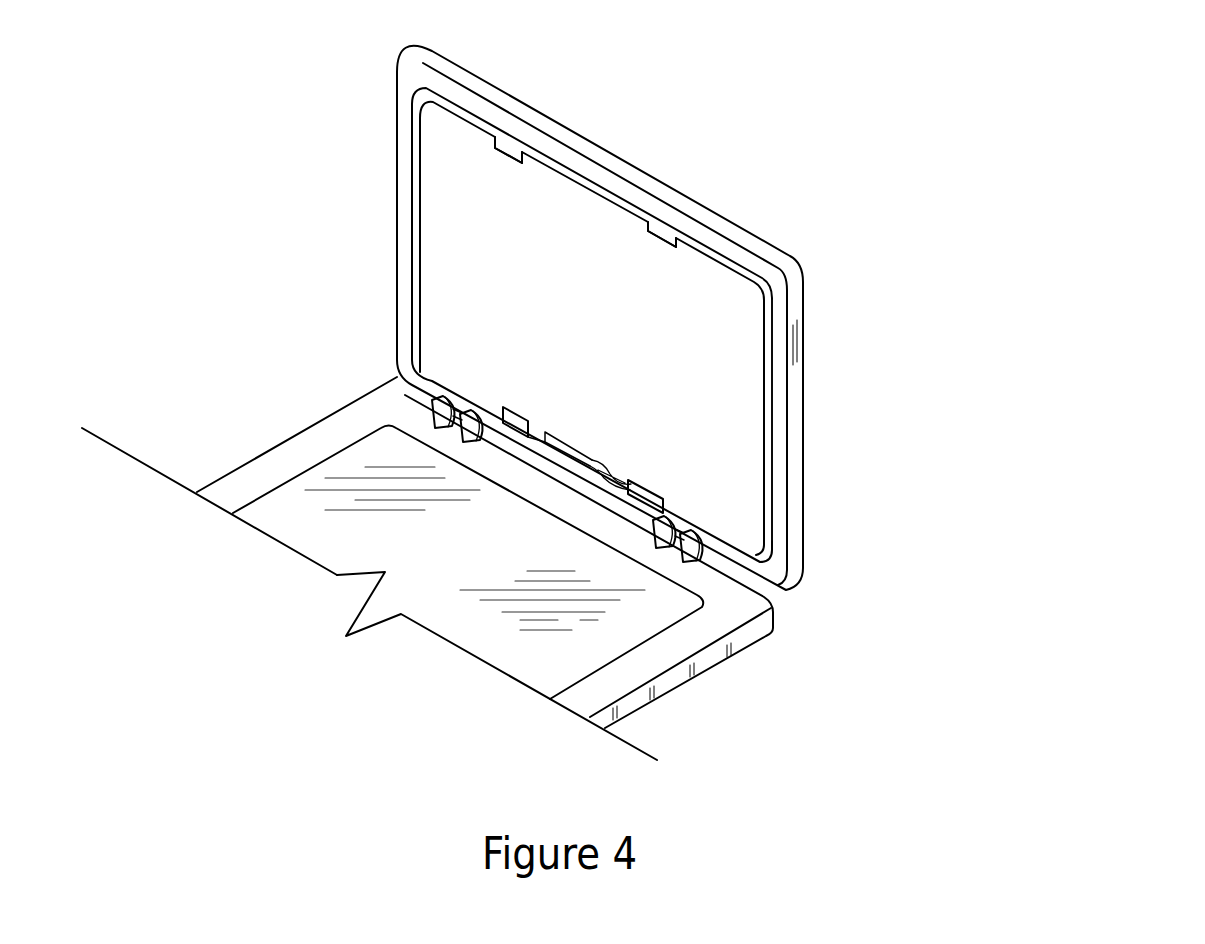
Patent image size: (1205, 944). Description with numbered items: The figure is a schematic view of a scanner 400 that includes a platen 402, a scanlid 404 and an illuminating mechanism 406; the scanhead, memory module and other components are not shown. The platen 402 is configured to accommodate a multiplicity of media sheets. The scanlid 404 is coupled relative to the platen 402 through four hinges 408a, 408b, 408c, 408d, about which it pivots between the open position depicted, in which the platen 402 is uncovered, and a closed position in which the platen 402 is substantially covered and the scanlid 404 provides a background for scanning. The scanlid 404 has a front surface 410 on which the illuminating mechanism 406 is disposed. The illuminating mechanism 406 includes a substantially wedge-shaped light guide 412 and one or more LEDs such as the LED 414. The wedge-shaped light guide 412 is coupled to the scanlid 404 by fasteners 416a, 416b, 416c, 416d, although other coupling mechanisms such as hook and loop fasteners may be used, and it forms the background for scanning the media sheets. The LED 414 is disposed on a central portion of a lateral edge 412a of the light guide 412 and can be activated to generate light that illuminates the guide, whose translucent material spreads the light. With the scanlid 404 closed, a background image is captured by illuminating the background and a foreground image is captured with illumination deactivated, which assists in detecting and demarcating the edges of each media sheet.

The scanner 400 is at (1052, 75).
The platen 402 is at (292, 493).
The scanlid 404 is at (800, 467).
The illuminating mechanism 406 is at (776, 512).
The hinge 408a is at (473, 413).
The hinge 408b is at (445, 398).
The hinge 408c is at (664, 517).
The hinge 408d is at (691, 532).
The front surface 410 is at (436, 84).
The wedge-shaped light guide 412 is at (777, 392).
The lateral edge 412a is at (404, 348).
The LED 414 is at (573, 452).
The fastener 416a is at (520, 409).
The fastener 416b is at (640, 479).
The fastener 416c is at (670, 235).
The fastener 416d is at (511, 146).